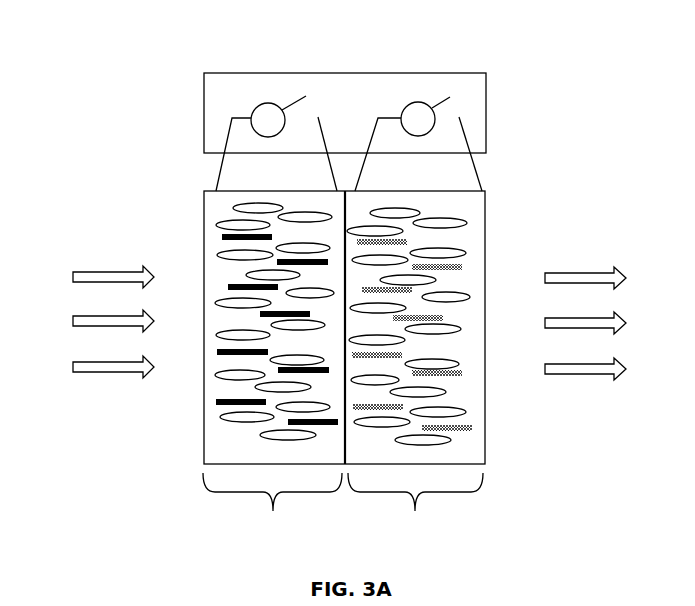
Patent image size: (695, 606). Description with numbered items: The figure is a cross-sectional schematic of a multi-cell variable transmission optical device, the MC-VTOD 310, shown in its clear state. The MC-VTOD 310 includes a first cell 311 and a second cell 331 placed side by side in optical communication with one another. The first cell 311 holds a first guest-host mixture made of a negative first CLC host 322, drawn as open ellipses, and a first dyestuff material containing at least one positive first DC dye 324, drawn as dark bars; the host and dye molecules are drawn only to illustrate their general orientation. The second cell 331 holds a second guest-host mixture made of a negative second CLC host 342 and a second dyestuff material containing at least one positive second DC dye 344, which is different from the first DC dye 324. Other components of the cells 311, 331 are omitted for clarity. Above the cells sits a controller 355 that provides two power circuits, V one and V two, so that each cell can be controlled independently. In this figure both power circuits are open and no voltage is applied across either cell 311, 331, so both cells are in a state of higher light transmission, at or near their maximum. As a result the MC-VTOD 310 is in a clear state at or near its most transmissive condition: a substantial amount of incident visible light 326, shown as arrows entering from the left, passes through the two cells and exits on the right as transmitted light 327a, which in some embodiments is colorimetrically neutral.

The MC-VTOD 310 is at (160, 81).
The controller 355 is at (483, 83).
The first cell 311 is at (243, 376).
The second cell 331 is at (442, 378).
The first CLC host 322 is at (220, 226).
The first DC dye 324 is at (218, 405).
The second CLC host 342 is at (455, 222).
The second DC dye 344 is at (467, 430).
The incident visible light 326 is at (88, 272).
The transmitted light 327a is at (580, 272).